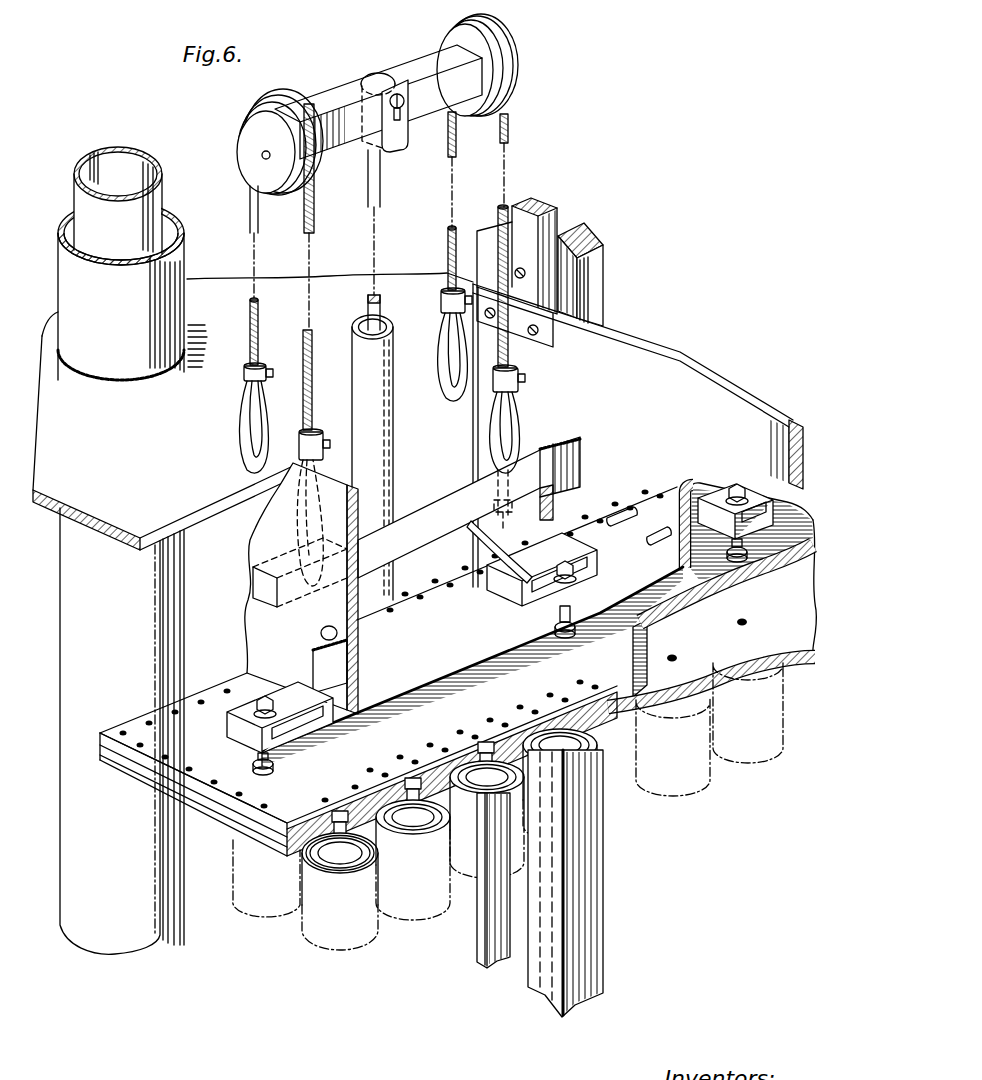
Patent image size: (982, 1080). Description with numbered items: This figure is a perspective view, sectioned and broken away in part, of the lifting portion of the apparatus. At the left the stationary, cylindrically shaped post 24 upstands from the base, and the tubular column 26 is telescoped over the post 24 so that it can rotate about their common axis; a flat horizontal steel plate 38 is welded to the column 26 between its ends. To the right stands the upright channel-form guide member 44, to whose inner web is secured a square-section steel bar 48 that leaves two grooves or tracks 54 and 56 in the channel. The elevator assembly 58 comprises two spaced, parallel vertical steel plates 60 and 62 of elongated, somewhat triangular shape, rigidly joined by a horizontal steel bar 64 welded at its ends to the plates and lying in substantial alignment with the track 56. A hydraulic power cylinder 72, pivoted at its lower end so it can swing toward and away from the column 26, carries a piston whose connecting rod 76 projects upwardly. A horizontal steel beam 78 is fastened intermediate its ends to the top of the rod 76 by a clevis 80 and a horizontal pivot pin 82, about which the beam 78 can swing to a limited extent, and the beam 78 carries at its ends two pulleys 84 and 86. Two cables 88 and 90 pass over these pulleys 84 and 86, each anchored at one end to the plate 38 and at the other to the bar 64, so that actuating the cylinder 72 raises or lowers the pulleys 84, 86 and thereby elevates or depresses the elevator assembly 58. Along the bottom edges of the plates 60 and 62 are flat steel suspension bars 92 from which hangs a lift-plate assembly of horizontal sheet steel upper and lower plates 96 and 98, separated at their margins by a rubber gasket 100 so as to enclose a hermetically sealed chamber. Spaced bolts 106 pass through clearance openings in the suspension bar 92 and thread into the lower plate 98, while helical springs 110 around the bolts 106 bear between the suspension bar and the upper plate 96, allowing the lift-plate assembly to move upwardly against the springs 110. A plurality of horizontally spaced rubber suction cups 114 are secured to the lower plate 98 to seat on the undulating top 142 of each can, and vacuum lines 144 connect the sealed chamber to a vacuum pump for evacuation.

The post 24 is at (153, 186).
The column 26 is at (186, 252).
The plate 38 is at (207, 512).
The guide member 44 is at (601, 263).
The bar 48 is at (553, 202).
The track 54 is at (492, 237).
The track 56 is at (585, 235).
The elevator assembly 58 is at (143, 718).
The plate 60 is at (664, 343).
The plate 62 is at (265, 631).
The bar 64 is at (428, 503).
The hydraulic power cylinder 72 is at (392, 451).
The connecting rod 76 is at (381, 182).
The beam 78 is at (408, 63).
The clevis 80 is at (400, 129).
The pivot pin 82 is at (411, 100).
The pulley 84 is at (250, 135).
The pulley 86 is at (506, 51).
The cable 88 is at (251, 336).
The cable 90 is at (508, 128).
The suspension bar 92 is at (395, 699).
The upper plate 96 is at (230, 792).
The lower plate 98 is at (238, 822).
The gasket 100 is at (290, 850).
The bolt 106 is at (265, 697).
The helical spring 110 is at (576, 629).
The suction cup 114 is at (338, 853).
The top 142 is at (371, 868).
The line 144 is at (509, 557).